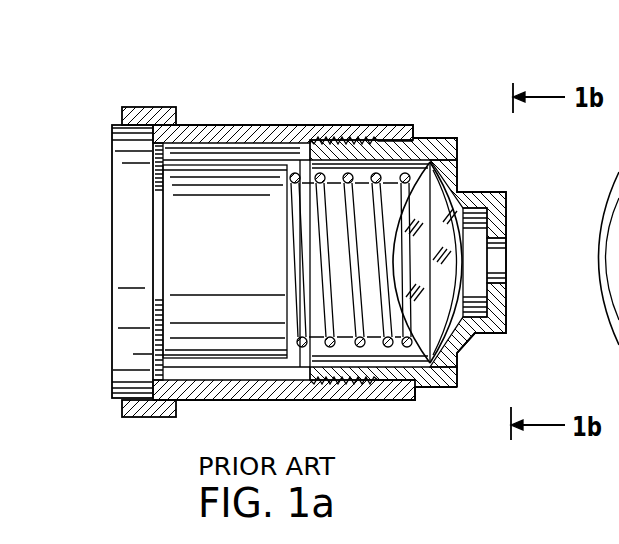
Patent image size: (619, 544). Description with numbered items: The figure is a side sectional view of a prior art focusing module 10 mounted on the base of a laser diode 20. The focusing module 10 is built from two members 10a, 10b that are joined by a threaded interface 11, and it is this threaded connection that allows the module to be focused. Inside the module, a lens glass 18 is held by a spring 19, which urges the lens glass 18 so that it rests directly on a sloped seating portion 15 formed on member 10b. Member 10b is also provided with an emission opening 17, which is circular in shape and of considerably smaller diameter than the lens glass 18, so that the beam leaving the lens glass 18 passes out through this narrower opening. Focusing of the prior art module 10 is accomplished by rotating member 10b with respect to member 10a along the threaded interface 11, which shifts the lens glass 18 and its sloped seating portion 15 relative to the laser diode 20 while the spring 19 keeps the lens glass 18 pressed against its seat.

In FIG. 1a, the focusing module 10 is at (452, 95).
In FIG. 1a, the member 10a is at (126, 420).
In FIG. 1a, the member 10b is at (432, 390).
In FIG. 1a, the threaded interface 11 is at (385, 132).
In FIG. 1a, the sloped seating portion 15 is at (468, 344).
In FIG. 1a, the emission opening 17 is at (500, 266).
In FIG. 1b, the emission opening 17 is at (618, 312).
In FIG. 1a, the lens glass 18 is at (443, 193).
In FIG. 1a, the spring 19 is at (333, 140).
In FIG. 1a, the laser diode 20 is at (125, 252).